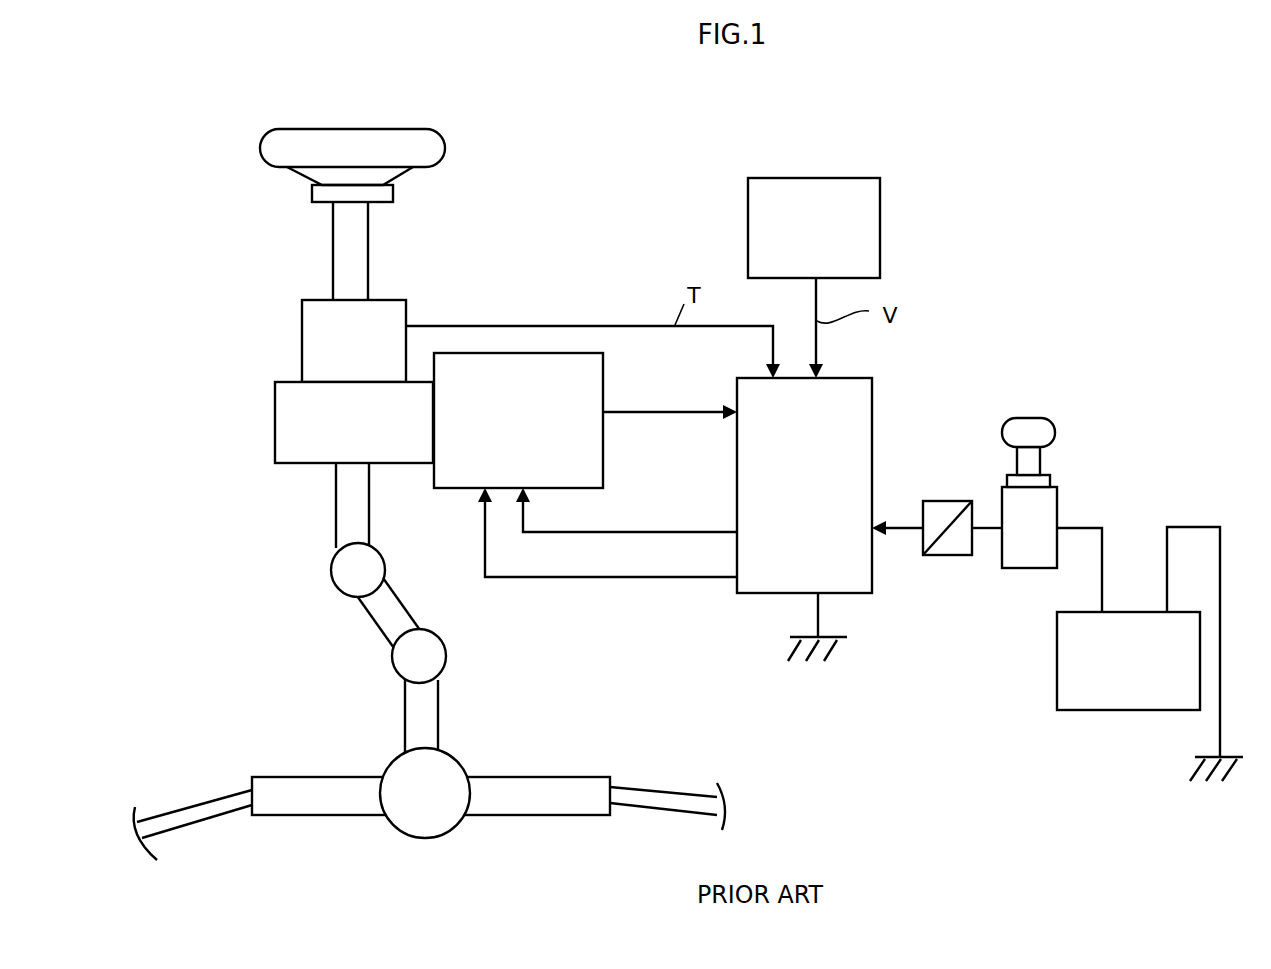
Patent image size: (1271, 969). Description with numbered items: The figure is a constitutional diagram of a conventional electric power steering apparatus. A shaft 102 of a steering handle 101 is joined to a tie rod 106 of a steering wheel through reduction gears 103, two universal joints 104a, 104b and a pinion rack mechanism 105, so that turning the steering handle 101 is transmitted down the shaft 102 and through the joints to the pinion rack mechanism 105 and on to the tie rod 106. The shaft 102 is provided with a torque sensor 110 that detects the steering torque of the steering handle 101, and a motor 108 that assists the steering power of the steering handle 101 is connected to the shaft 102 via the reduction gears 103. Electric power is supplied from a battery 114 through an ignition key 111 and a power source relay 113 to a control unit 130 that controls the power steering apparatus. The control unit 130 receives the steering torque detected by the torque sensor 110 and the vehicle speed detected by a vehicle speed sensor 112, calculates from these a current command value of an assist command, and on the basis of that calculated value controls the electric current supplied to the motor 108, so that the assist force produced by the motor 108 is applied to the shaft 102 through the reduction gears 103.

The steering handle 101 is at (445, 150).
The shaft 102 is at (337, 253).
The torque sensor 110 is at (302, 347).
The reduction gears 103 is at (275, 440).
The motor 108 is at (557, 353).
The universal joint 104a is at (330, 578).
The universal joint 104b is at (397, 675).
The pinion rack mechanism 105 is at (466, 758).
The tie rod 106 is at (663, 802).
The vehicle speed sensor 112 is at (880, 217).
The control unit 130 is at (872, 407).
The ignition key 111 is at (1055, 437).
The power source relay 113 is at (950, 555).
The battery 114 is at (1088, 710).